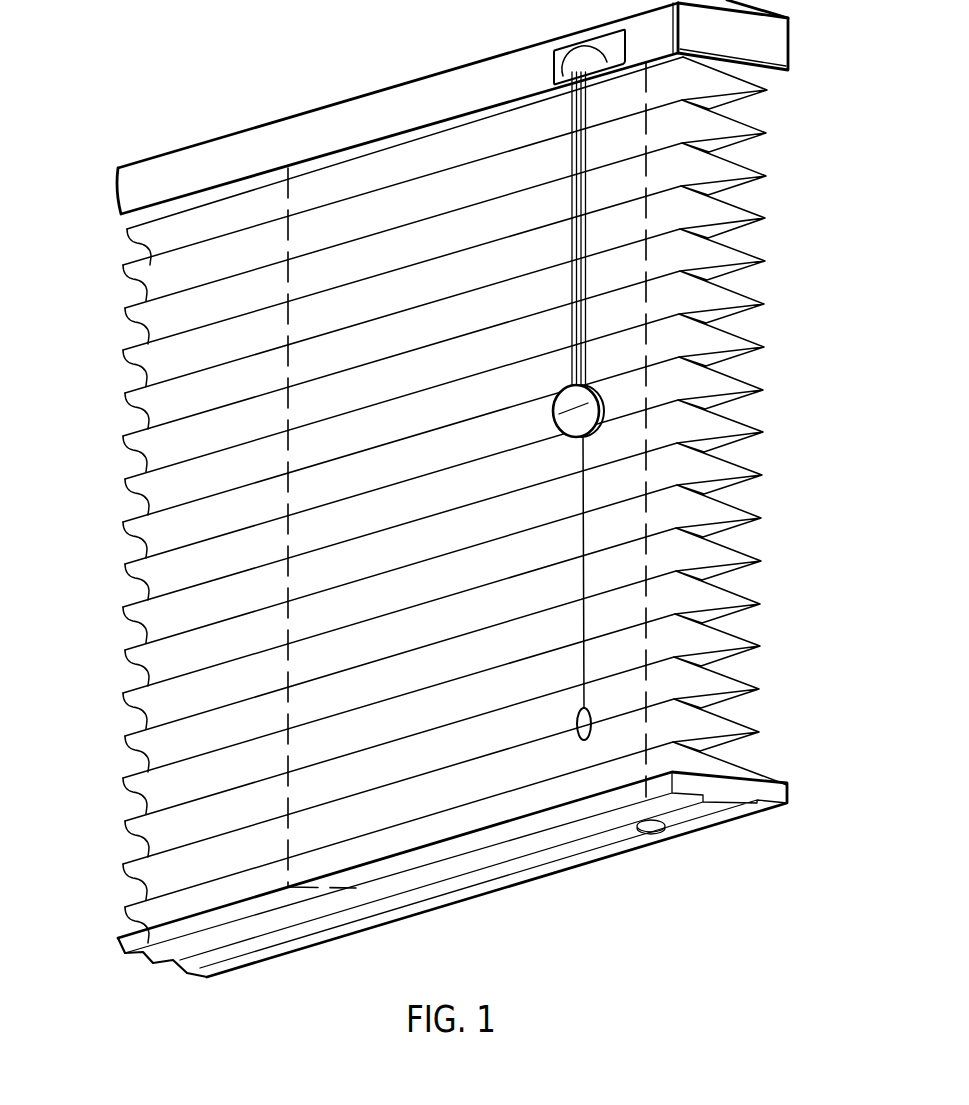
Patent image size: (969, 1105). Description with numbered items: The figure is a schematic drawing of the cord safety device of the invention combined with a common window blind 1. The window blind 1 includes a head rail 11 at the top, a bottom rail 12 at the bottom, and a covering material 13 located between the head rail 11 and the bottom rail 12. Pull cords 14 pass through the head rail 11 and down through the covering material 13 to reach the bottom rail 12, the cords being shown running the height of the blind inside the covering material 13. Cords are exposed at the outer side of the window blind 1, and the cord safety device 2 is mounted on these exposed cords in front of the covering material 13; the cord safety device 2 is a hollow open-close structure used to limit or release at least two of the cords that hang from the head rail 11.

The window blind 1 is at (826, 175).
The cord safety device 2 is at (606, 428).
The head rail 11 is at (395, 100).
The bottom rail 12 is at (733, 790).
The covering material 13 is at (152, 632).
The pull cords 14 is at (649, 478).